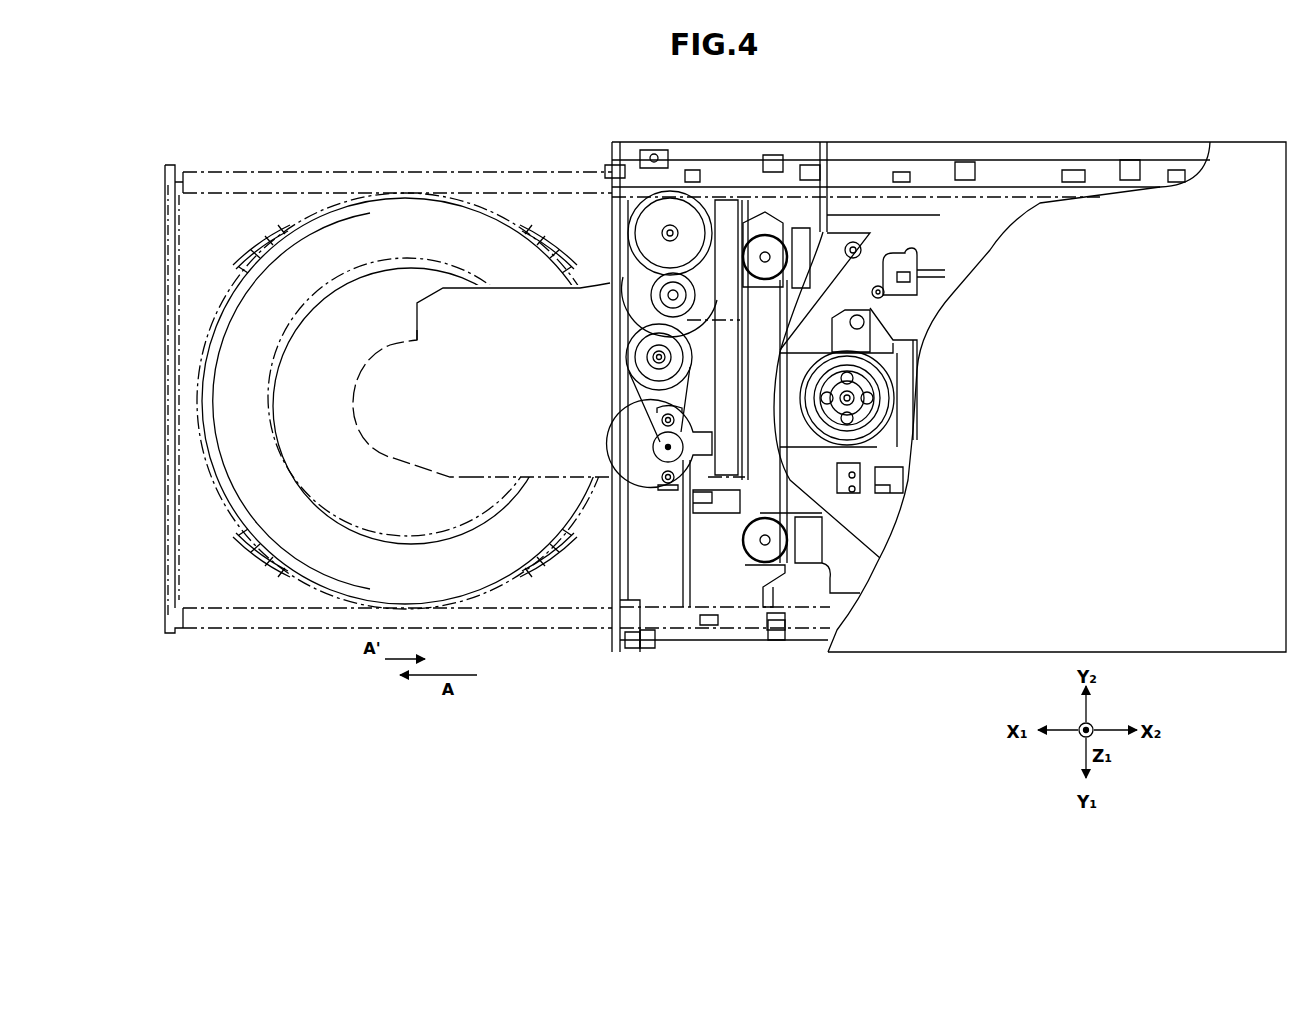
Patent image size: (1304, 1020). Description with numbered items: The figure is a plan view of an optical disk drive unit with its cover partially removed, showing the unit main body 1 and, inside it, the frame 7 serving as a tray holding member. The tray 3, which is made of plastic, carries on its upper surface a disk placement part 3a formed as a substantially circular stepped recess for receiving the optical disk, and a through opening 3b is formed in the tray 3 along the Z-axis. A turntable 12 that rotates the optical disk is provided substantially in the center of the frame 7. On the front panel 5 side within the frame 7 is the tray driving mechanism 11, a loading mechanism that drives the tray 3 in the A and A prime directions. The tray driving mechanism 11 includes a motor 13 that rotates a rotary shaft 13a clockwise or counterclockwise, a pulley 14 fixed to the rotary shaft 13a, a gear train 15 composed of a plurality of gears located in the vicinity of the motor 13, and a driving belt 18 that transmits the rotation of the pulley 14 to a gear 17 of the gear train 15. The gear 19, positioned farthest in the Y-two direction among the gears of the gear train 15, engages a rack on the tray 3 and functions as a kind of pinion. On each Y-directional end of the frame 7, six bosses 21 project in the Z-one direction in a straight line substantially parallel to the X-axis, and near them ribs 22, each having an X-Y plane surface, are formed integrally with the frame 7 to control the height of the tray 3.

The unit main body 1 is at (1248, 142).
The tray 3 is at (373, 197).
The disk placement part 3a is at (283, 278).
The through opening 3b is at (500, 283).
The front panel 5 is at (610, 572).
The frame 7 is at (610, 620).
The tray driving mechanism 11 is at (566, 472).
The turntable 12 is at (887, 398).
The motor 13 is at (628, 467).
The rotary shaft 13a is at (667, 447).
The pulley 14 is at (657, 453).
The gear train 15 is at (625, 337).
The gear 17 is at (627, 312).
The driving belt 18 is at (640, 397).
The gear 19 is at (632, 212).
The bosses 21 is at (613, 162).
The ribs 22 is at (648, 170).